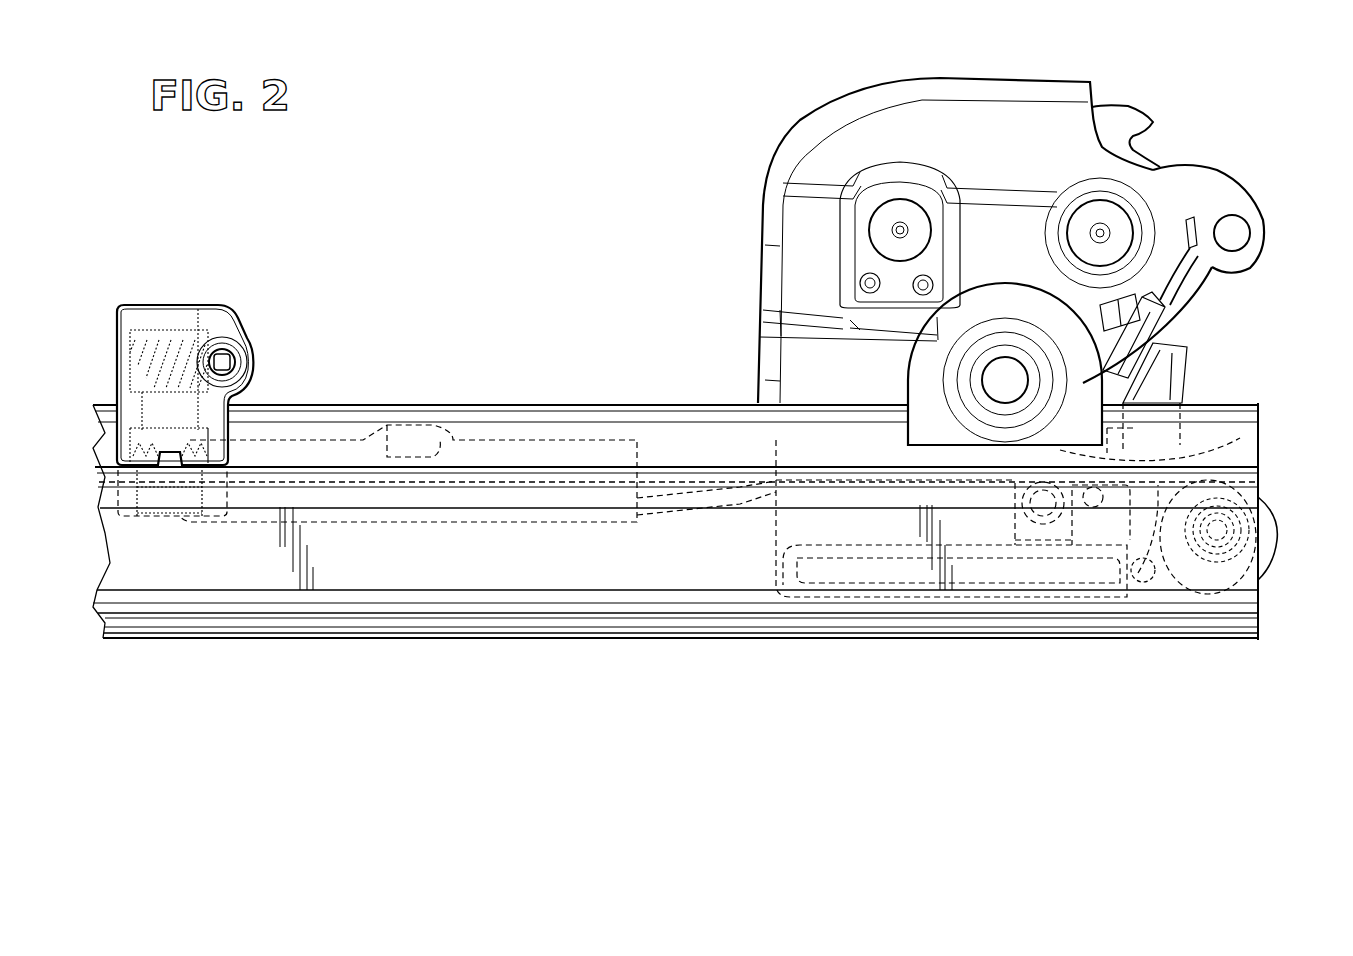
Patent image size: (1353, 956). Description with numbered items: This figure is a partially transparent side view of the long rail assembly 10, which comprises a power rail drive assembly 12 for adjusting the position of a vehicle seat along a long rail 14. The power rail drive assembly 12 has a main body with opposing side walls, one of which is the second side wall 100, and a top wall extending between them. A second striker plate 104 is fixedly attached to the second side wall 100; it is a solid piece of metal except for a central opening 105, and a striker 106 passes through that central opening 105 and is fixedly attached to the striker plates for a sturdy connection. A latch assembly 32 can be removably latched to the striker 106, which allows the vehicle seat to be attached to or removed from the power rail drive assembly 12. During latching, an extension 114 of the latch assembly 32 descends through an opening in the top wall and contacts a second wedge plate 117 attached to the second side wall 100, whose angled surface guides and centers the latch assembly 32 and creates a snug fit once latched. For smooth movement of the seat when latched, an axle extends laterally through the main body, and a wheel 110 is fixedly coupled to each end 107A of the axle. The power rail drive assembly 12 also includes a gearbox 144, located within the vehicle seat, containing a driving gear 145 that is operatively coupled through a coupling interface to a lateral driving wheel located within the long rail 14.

The long rail assembly 10 is at (478, 232).
The power rail drive assembly 12 is at (1176, 390).
The long rail 14 is at (1251, 652).
The latch assembly 32 is at (826, 108).
The second side wall 100 is at (1240, 442).
The second striker plate 104 is at (1083, 383).
The central opening 105 is at (997, 377).
The striker 106 is at (997, 377).
The end of the axle 107A is at (1138, 573).
The wheel 110 is at (1276, 515).
The extension 114 is at (1180, 436).
The second wedge plate 117 is at (1169, 444).
The gearbox 144 is at (108, 338).
The driving gear 145 is at (202, 400).